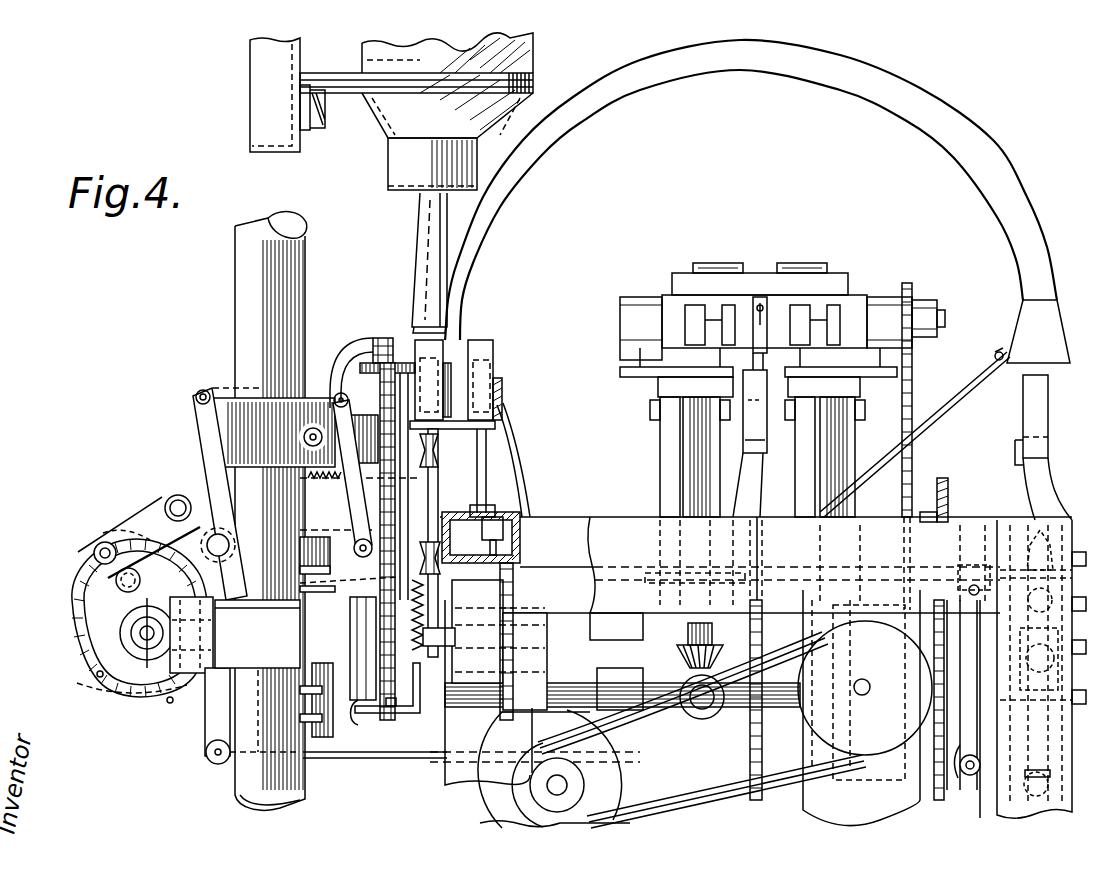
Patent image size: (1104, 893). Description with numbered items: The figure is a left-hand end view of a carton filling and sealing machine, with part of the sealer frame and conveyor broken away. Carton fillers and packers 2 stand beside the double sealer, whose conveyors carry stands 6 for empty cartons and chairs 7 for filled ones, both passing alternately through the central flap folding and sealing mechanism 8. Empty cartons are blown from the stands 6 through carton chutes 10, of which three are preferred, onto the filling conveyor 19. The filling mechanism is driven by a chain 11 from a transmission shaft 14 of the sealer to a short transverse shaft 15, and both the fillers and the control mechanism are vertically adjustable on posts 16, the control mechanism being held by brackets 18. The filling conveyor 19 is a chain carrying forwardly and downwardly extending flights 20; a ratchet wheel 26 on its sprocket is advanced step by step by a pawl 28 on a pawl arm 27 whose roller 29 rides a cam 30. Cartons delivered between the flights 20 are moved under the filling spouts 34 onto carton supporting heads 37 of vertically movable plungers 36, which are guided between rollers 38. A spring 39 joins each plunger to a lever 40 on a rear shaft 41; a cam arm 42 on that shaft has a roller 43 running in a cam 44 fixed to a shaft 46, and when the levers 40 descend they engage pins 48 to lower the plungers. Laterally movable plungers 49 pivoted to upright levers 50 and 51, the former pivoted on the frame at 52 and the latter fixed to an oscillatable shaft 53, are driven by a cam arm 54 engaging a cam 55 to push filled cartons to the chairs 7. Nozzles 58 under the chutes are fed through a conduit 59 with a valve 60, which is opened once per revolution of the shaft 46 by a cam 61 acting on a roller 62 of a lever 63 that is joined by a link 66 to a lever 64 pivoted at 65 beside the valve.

The carton fillers and packers 2 is at (536, 46).
The stands 6 is at (1038, 490).
The chairs 7 is at (488, 480).
The flap folding and sealing mechanism 8 is at (771, 259).
The carton chutes 10 is at (947, 167).
The chain 11 is at (518, 628).
The transmission shaft 14 is at (579, 682).
The short transverse shaft 15 is at (440, 637).
The posts 16 is at (250, 250).
The brackets 18 is at (300, 690).
The filling conveyor 19 is at (393, 722).
The flights 20 is at (417, 714).
The ratchet wheel 26 is at (357, 713).
The pawl arm 27 is at (362, 698).
The pawl 28 is at (300, 616).
The roller 29 is at (300, 590).
The cam 30 is at (300, 718).
The filling spouts 34 is at (430, 268).
The vertically movable plungers 36 is at (447, 489).
The carton supporting heads 37 is at (497, 405).
The rollers 38 is at (436, 463).
The spring 39 is at (430, 613).
The lever 40 is at (309, 536).
The shaft 41 is at (178, 503).
The cam arm 42 is at (148, 520).
The roller 43 is at (104, 548).
The cam 44 is at (73, 571).
The shaft 46 is at (147, 640).
The pins 48 is at (423, 583).
The laterally movable plungers 49 is at (317, 390).
The upright lever 50 is at (358, 515).
The upright lever 51 is at (198, 412).
The pivot 52 is at (359, 543).
The oscillatable shaft 53 is at (218, 532).
The cam arm 54 is at (300, 571).
The cam 55 is at (152, 604).
The nozzles 58 is at (1026, 574).
The conduit 59 is at (1052, 781).
The valve 60 is at (1025, 712).
The cam 61 is at (99, 677).
The roller 62 is at (168, 703).
The lever 63 is at (212, 718).
The lever 64 is at (966, 782).
The pivot 65 is at (975, 585).
The link 66 is at (392, 760).